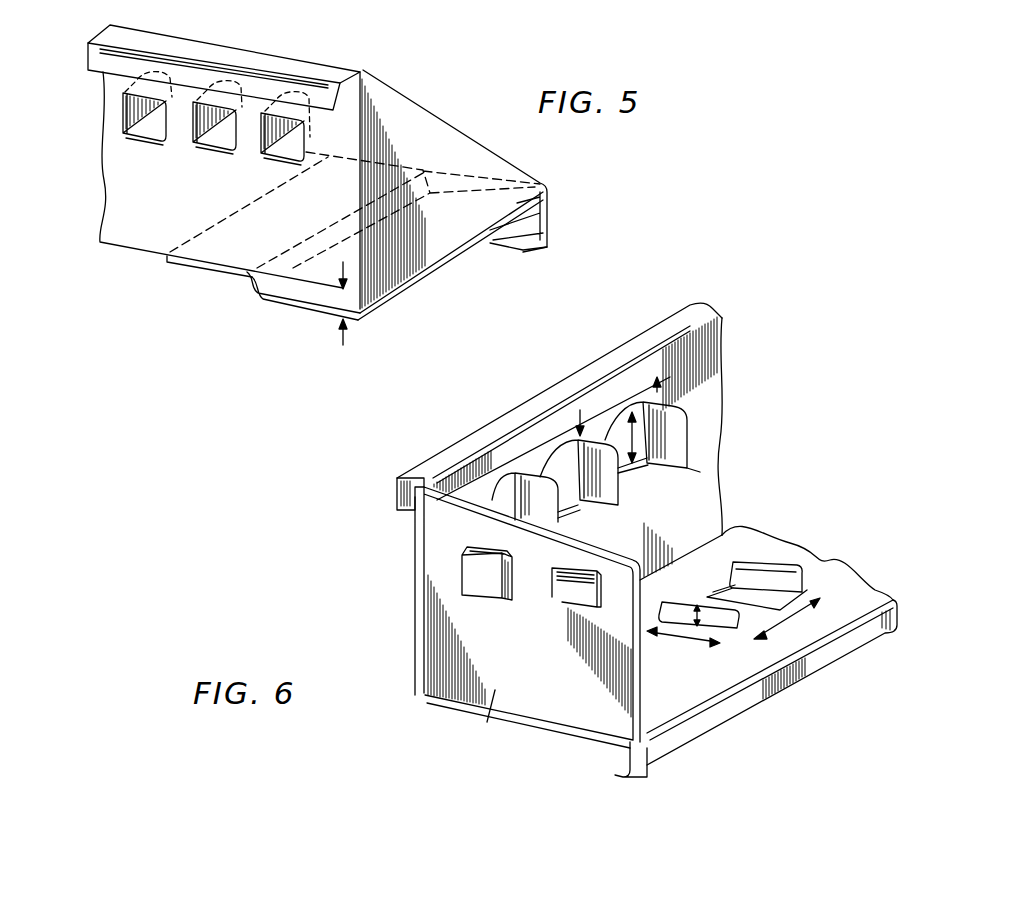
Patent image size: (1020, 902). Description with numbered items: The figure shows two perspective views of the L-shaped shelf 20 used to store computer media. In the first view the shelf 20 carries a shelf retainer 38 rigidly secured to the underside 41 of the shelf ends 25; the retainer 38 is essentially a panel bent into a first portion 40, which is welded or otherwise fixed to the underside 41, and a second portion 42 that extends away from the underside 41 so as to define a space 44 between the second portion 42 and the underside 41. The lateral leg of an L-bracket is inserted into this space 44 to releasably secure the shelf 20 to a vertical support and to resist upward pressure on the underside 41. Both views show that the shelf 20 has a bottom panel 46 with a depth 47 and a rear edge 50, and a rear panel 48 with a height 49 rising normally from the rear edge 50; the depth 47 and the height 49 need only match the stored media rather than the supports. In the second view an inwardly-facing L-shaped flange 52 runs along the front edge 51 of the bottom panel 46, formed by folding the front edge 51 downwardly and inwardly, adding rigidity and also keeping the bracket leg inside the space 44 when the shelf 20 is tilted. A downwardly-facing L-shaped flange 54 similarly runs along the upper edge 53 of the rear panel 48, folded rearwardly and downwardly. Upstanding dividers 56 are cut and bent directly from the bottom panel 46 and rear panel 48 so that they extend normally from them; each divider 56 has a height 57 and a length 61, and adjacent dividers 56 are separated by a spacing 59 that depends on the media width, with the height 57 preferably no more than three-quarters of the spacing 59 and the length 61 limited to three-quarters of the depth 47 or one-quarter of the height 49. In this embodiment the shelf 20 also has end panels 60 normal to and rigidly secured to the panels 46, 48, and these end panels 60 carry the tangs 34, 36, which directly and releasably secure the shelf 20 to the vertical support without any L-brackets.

In FIG. 5, the shelf 20 is at (140, 247).
In FIG. 6, the shelf 20 is at (404, 552).
In FIG. 5, the shelf ends 25 is at (473, 240).
In FIG. 6, the tang 34 is at (565, 590).
In FIG. 6, the tang 36 is at (485, 583).
In FIG. 5, the shelf retainer 38 is at (403, 307).
In FIG. 5, the first portion 40 is at (207, 272).
In FIG. 5, the underside 41 is at (113, 248).
In FIG. 5, the second portion 42 is at (407, 283).
In FIG. 5, the space 44 is at (337, 296).
In FIG. 6, the bottom panel 46 is at (737, 660).
In FIG. 6, the depth 47 is at (540, 728).
In FIG. 6, the rear panel 48 is at (715, 507).
In FIG. 6, the height 49 is at (415, 588).
In FIG. 6, the rear edge 50 is at (735, 523).
In FIG. 6, the front edge 51 is at (817, 653).
In FIG. 6, the L-shaped flange 52 is at (703, 727).
In FIG. 6, the upper edge 53 is at (590, 388).
In FIG. 6, the L-shaped flange 54 is at (542, 400).
In FIG. 6, the dividers 56 is at (673, 433).
In FIG. 6, the height 57 is at (648, 467).
In FIG. 6, the spacing 59 is at (618, 392).
In FIG. 6, the end panels 60 is at (477, 730).
In FIG. 6, the length 61 is at (657, 392).